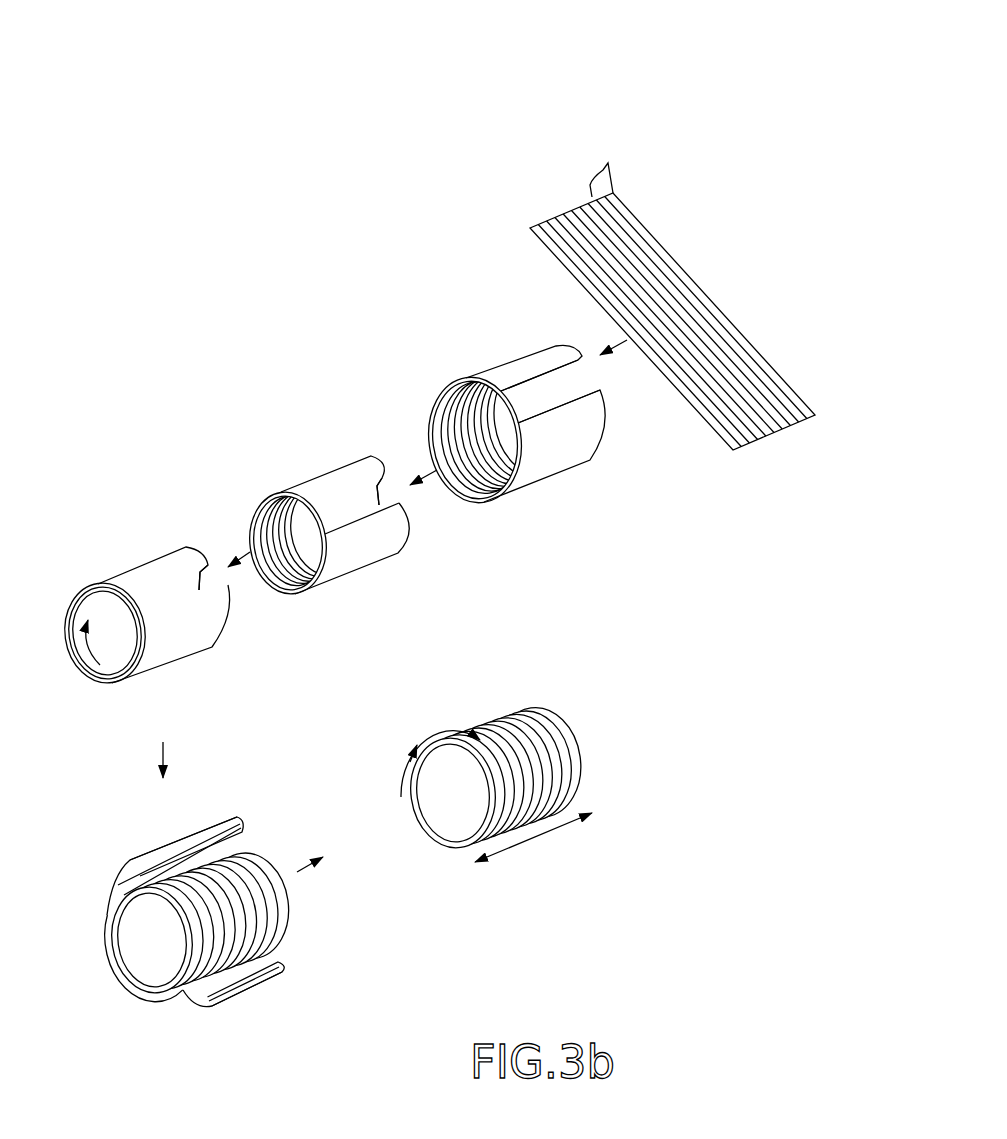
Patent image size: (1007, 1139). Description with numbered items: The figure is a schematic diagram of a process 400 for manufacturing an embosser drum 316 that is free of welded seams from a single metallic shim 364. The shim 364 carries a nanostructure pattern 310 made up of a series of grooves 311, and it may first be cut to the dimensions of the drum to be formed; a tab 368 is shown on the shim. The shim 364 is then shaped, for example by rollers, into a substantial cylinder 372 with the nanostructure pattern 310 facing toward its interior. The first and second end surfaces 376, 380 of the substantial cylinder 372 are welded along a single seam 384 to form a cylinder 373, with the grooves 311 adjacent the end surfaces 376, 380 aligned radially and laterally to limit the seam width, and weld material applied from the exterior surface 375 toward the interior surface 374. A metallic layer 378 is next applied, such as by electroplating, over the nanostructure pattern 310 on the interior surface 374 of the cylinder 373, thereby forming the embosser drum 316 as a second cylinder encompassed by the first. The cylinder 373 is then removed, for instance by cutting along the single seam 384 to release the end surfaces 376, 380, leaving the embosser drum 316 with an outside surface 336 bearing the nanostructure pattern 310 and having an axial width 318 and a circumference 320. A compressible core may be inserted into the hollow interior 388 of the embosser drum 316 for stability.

The process 400 is at (362, 90).
The nanostructure pattern 310 is at (531, 226).
The grooves 311 is at (394, 683).
The embosser drum 316 is at (379, 808).
The axial width 318 is at (540, 840).
The circumference 320 is at (438, 840).
The outside surface 336 is at (268, 880).
The single metallic shim 364 is at (482, 611).
The tab 368 is at (603, 178).
The substantial cylinder 372 is at (477, 372).
The cylinder 373 is at (294, 474).
The interior surface 374 is at (472, 500).
The exterior surface 375 is at (598, 436).
The first end surface 376 is at (588, 361).
The metallic layer 378 is at (90, 590).
The second end surface 380 is at (600, 388).
The single seam 384 is at (382, 480).
The hollow interior 388 is at (430, 793).